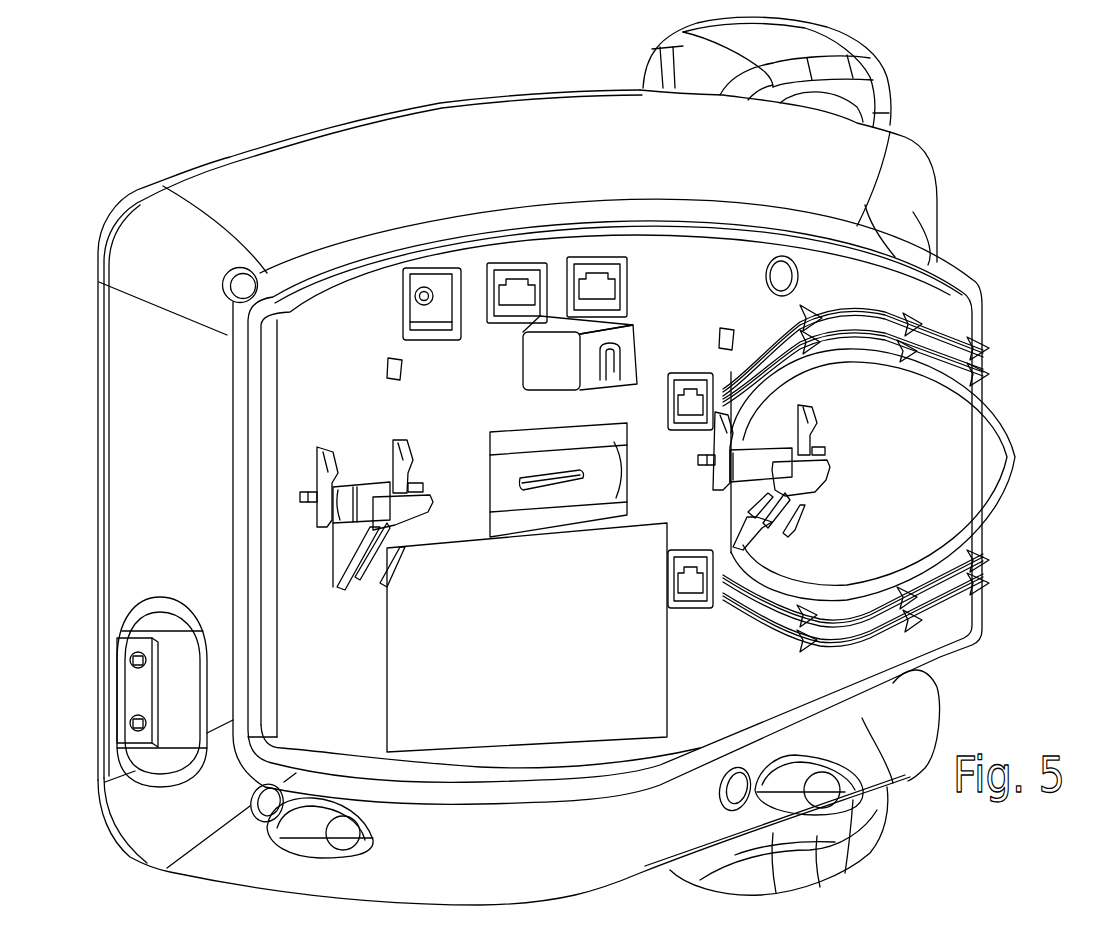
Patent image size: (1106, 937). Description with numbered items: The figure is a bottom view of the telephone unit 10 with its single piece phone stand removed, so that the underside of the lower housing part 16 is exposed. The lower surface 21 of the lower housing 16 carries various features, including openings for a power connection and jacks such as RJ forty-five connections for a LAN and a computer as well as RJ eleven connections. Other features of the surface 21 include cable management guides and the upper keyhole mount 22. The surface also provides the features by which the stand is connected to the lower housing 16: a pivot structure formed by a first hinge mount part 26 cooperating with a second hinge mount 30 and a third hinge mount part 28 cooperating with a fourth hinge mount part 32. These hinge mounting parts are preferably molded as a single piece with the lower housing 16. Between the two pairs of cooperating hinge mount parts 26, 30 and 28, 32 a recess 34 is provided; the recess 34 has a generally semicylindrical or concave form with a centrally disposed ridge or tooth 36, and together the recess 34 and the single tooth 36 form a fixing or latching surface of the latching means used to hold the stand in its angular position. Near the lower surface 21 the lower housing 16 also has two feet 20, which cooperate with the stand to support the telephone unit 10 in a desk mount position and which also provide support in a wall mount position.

The telephone unit 10 is at (295, 143).
The lower housing part 16 is at (915, 210).
The feet 20 is at (373, 837).
The lower surface 21 is at (643, 270).
The upper keyhole mount 22 is at (630, 338).
The first hinge mount part 26 is at (323, 462).
The third hinge mount part 28 is at (800, 413).
The second hinge mount 30 is at (400, 510).
The fourth hinge mount part 32 is at (820, 480).
The recess 34 is at (587, 464).
The ridge or tooth 36 is at (547, 477).